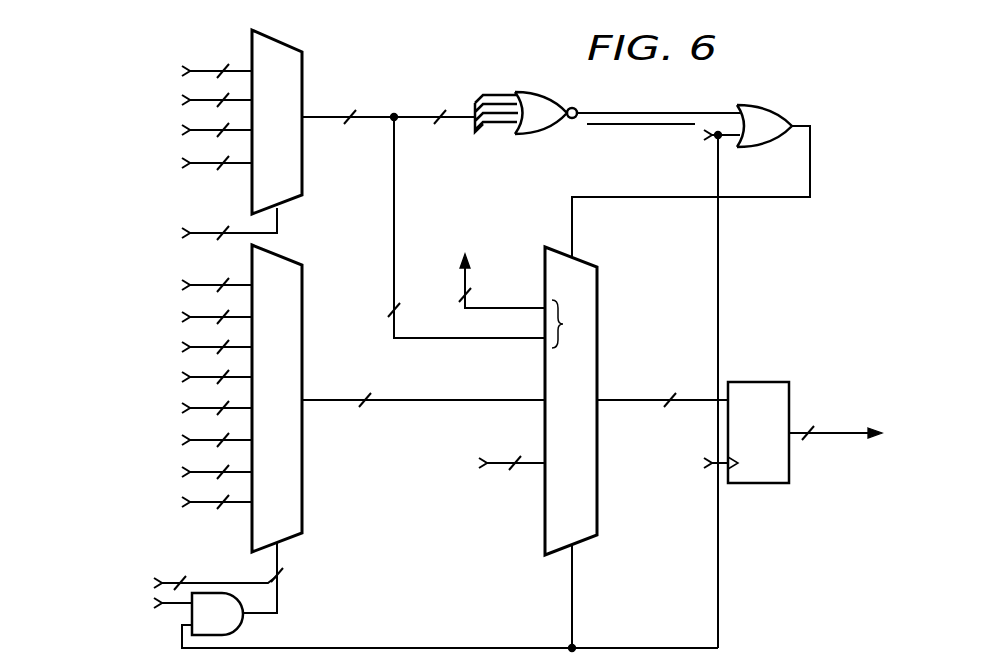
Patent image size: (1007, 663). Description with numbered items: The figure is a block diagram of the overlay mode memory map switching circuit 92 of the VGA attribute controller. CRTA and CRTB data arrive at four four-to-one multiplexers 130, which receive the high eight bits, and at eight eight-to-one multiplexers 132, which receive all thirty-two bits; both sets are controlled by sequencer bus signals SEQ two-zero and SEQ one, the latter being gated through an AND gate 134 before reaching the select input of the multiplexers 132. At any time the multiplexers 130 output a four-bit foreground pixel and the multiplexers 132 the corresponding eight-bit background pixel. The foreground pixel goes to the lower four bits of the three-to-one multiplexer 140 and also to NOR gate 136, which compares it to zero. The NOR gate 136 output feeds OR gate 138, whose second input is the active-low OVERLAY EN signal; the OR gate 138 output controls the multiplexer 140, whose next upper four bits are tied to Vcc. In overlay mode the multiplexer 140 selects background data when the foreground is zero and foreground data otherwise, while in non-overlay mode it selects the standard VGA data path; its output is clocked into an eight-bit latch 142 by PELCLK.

The overlay mode memory map switching circuit 92 is at (806, 74).
The 4-1 multiplexers 130 is at (302, 150).
The 8-1 multiplexers 132 is at (302, 484).
The AND gate 134 is at (211, 592).
The NOR gate 136 is at (530, 90).
The OR gate 138 is at (752, 102).
The 3-1 multiplexer 140 is at (597, 297).
The 8-bit latch 142 is at (789, 468).